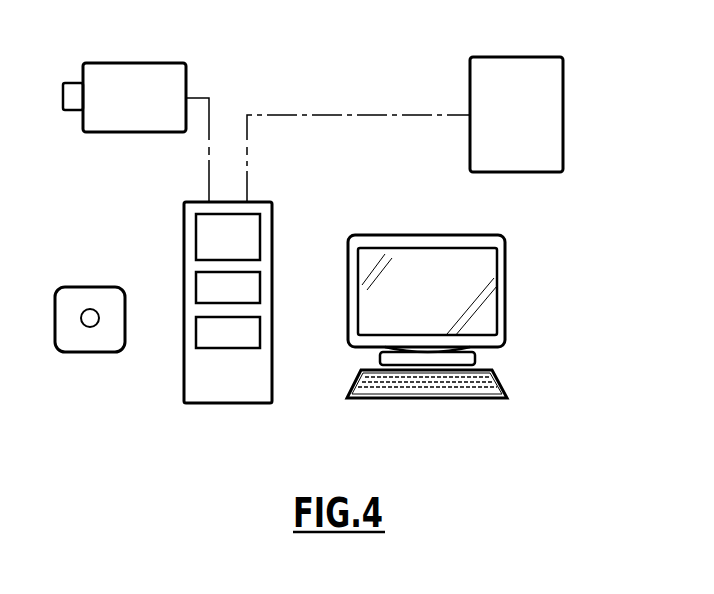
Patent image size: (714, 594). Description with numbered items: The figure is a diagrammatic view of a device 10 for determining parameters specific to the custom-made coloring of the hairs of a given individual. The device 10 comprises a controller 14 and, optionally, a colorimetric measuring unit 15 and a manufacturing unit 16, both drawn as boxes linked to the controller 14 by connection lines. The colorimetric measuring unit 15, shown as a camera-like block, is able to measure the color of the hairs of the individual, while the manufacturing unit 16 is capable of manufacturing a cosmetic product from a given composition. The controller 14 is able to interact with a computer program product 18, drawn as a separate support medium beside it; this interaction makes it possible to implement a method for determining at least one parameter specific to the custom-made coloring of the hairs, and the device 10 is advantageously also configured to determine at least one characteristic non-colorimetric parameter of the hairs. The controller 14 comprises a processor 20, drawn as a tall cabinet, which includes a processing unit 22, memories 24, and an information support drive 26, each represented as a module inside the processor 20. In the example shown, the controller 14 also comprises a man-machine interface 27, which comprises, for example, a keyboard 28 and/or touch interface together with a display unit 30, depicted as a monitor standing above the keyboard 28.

The device 10 is at (135, 403).
The controller 14 is at (345, 200).
The colorimetric measuring unit 15 is at (143, 80).
The manufacturing unit 16 is at (543, 108).
The computer program product 18 is at (110, 322).
The processor 20 is at (251, 302).
The processing unit 22 is at (252, 330).
The memories 24 is at (250, 288).
The information support drive 26 is at (248, 242).
The man-machine interface 27 is at (493, 316).
The keyboard 28 is at (456, 381).
The display unit 30 is at (483, 312).